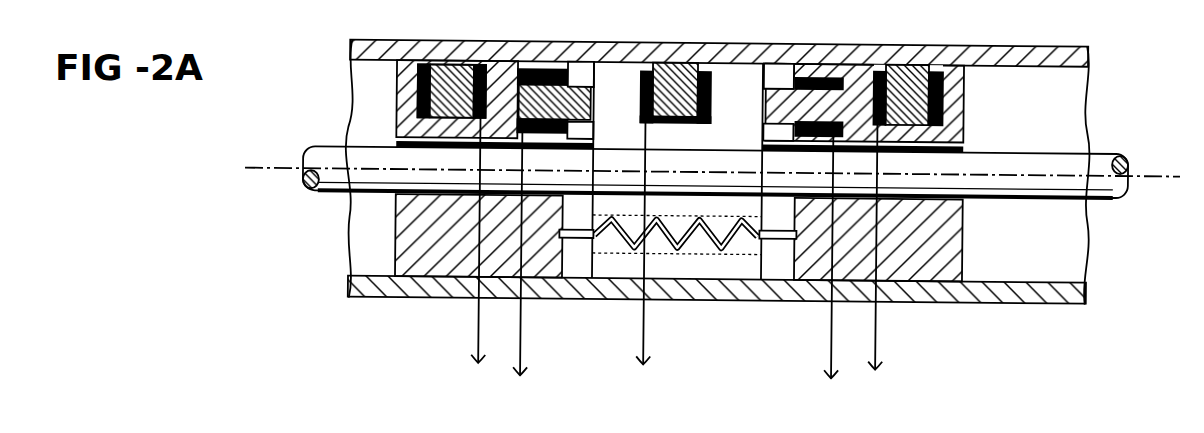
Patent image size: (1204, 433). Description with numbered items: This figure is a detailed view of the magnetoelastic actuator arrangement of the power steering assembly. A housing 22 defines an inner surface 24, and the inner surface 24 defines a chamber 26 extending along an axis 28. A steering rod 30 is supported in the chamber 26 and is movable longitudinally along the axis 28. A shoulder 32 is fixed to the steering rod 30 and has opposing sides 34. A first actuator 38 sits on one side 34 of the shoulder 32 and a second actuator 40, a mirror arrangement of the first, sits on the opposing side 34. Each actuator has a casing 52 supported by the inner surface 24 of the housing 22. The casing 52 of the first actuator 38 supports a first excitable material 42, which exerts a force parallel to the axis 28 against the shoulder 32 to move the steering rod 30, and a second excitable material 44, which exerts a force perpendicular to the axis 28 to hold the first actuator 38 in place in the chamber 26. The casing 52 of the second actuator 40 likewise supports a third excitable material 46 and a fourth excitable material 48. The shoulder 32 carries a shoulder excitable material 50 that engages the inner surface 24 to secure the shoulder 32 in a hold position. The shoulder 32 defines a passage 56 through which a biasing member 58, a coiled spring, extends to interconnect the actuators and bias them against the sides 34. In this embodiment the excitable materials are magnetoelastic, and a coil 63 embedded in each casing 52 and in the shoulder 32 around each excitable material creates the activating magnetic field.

The housing 22 is at (458, 51).
The inner surface 24 is at (352, 279).
The chamber 26 is at (362, 233).
The axis 28 is at (268, 170).
The steering rod 30 is at (329, 151).
The shoulder 32 is at (728, 75).
The opposing sides 34 is at (583, 68).
The first actuator 38 is at (967, 120).
The second actuator 40 is at (396, 103).
The first excitable material 42 is at (800, 76).
The second excitable material 44 is at (885, 70).
The third excitable material 46 is at (571, 71).
The fourth excitable material 48 is at (440, 67).
The shoulder excitable material 50 is at (672, 63).
The casing 52 is at (394, 236).
The passage 56 is at (588, 240).
The biasing member 58 is at (779, 239).
The coil 63 is at (418, 103).